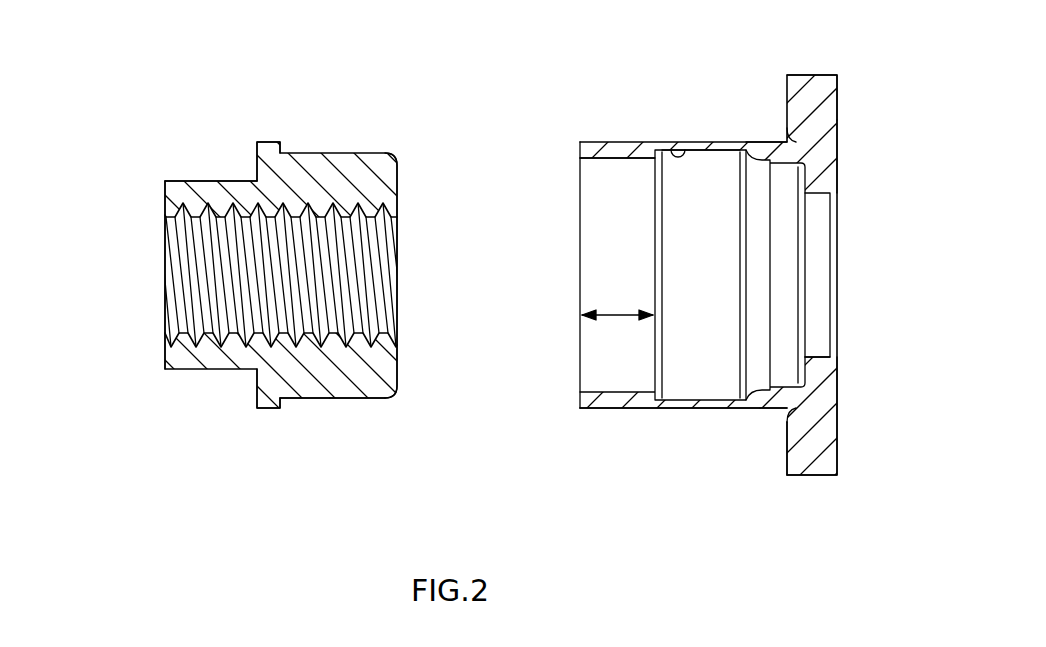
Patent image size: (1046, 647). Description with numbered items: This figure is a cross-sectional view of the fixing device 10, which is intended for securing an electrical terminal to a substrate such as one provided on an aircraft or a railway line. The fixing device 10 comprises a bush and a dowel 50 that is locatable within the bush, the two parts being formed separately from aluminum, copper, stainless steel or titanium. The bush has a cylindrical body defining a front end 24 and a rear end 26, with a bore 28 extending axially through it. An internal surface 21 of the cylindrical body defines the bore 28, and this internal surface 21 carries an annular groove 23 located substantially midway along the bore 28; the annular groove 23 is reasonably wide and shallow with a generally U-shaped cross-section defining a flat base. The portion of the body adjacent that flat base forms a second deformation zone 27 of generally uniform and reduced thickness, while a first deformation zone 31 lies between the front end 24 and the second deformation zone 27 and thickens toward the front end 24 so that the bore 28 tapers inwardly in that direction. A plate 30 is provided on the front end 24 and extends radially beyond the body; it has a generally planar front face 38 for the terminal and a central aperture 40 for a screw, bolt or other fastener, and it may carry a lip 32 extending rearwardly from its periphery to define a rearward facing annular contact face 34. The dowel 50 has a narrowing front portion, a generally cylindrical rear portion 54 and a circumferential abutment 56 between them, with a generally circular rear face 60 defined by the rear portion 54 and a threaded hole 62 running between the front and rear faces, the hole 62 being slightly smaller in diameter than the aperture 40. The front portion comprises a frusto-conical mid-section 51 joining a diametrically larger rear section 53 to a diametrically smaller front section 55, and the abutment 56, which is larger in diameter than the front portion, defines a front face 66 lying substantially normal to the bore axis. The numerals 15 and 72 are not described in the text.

The fixing device 10 is at (568, 458).
The dimple 15 is at (684, 145).
The internal surface 21 is at (615, 313).
The annular groove 23 is at (712, 168).
The front end 24 is at (838, 202).
The rear end 26 is at (578, 148).
The second deformation zone 27 is at (728, 145).
The bore 28 is at (618, 187).
The plate 30 is at (838, 425).
The first deformation zone 31 is at (837, 110).
The lip 32 is at (803, 450).
The annular contact face 34 is at (787, 432).
The front face 38 is at (840, 147).
The aperture 40 is at (805, 353).
The tube bottom wall 72 is at (675, 410).
The dowel 50 is at (165, 368).
The frusto-conical mid-section 51 is at (347, 398).
The rear section 53 is at (305, 400).
The rear portion 54 is at (192, 190).
The front section 55 is at (380, 394).
The circumferential abutment 56 is at (257, 140).
The rear face 60 is at (165, 193).
The hole 62 is at (197, 257).
The front face 66 is at (281, 400).